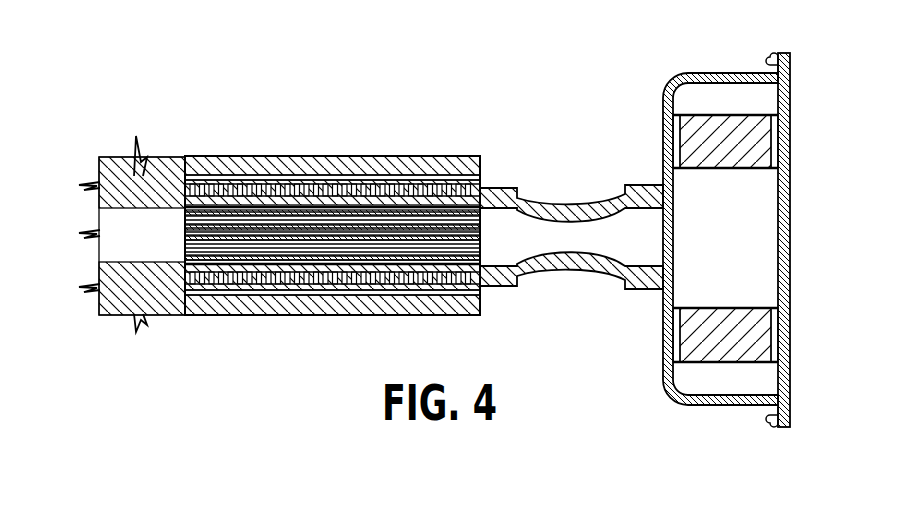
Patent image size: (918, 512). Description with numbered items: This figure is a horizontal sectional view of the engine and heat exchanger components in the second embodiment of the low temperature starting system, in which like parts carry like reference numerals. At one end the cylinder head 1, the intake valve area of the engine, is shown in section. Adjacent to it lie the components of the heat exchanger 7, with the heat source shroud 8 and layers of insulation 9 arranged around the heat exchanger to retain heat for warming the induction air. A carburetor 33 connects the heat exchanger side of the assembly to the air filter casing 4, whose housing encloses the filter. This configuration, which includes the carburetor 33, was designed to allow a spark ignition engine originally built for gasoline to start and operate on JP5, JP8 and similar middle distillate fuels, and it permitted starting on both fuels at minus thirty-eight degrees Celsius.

The cylinder head 1 is at (167, 303).
The air filter casing 4 is at (700, 378).
The heat exchanger 7 is at (468, 276).
The heat source shroud 8 is at (413, 178).
The insulation 9 is at (305, 163).
The carburetor 33 is at (583, 205).